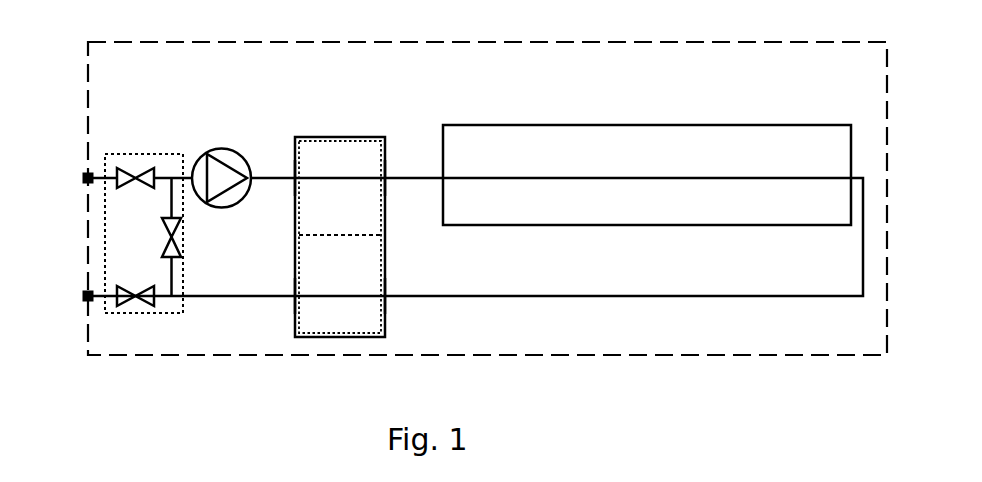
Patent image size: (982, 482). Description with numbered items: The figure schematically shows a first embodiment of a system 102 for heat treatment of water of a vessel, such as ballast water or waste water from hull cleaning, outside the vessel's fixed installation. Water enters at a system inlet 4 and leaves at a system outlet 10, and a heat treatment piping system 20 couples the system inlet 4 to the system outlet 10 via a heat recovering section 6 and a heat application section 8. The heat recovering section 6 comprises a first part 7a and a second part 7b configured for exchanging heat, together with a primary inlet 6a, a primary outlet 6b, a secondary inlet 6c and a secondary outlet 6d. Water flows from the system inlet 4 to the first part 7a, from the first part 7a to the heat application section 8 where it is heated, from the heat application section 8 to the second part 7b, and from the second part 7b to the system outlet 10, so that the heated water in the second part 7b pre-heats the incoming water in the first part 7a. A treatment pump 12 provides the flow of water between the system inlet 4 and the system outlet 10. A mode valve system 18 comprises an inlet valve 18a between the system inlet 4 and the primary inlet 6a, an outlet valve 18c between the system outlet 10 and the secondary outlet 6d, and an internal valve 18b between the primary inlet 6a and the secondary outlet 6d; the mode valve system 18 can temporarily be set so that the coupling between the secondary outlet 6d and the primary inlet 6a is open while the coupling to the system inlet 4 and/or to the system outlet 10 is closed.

The system 102 is at (139, 42).
The system inlet 4 is at (83, 175).
The system outlet 10 is at (83, 292).
The treatment pump 12 is at (222, 147).
The mode valve system 18 is at (169, 256).
The inlet valve 18a is at (125, 168).
The internal valve 18b is at (177, 228).
The outlet valve 18c is at (145, 305).
The heat treatment piping system 20 is at (268, 297).
The heat recovering section 6 is at (330, 212).
The primary inlet 6a is at (295, 178).
The primary outlet 6b is at (386, 176).
The secondary inlet 6c is at (386, 292).
The secondary outlet 6d is at (295, 293).
The first part of the heat recovering section 7a is at (382, 200).
The second part of the heat recovering section 7b is at (382, 272).
The heat application section 8 is at (498, 226).